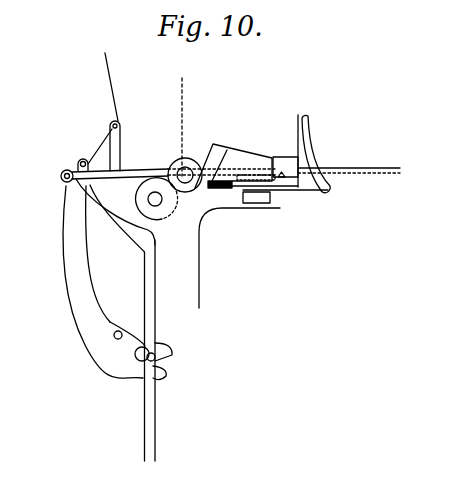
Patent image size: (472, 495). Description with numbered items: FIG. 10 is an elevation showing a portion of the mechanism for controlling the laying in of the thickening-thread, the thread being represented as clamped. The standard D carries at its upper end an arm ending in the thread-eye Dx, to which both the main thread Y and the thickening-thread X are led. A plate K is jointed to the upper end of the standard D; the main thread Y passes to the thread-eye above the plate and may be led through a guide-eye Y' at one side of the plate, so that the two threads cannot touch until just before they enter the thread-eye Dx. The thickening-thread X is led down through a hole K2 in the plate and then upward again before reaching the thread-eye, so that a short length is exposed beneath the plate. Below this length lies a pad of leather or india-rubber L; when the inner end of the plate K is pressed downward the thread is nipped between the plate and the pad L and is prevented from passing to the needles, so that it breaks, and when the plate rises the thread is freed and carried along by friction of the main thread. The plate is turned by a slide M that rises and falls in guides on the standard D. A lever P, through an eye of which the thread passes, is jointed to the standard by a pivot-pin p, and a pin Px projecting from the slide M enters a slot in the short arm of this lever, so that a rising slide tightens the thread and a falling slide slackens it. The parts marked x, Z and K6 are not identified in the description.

The inclined guide line x is at (114, 87).
The main thread Y is at (190, 127).
The guide-eye Y' is at (221, 166).
The plate K is at (112, 188).
The hole K2 is at (166, 199).
The pad L is at (246, 175).
The block K6 is at (256, 198).
The thread-eye Dx is at (280, 156).
The rod Z is at (349, 158).
The thickening-thread X is at (349, 181).
The standard D is at (178, 320).
The slide M is at (143, 270).
The lever P is at (104, 282).
The pivot-pin p is at (121, 331).
The pin Px is at (168, 367).